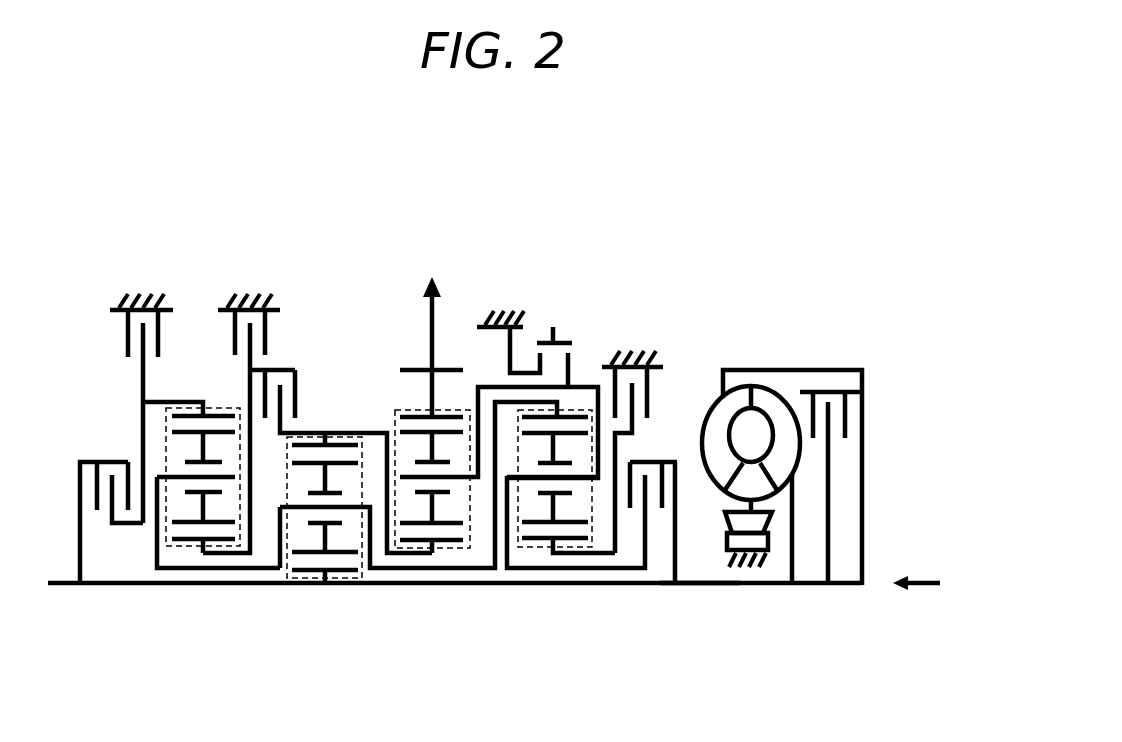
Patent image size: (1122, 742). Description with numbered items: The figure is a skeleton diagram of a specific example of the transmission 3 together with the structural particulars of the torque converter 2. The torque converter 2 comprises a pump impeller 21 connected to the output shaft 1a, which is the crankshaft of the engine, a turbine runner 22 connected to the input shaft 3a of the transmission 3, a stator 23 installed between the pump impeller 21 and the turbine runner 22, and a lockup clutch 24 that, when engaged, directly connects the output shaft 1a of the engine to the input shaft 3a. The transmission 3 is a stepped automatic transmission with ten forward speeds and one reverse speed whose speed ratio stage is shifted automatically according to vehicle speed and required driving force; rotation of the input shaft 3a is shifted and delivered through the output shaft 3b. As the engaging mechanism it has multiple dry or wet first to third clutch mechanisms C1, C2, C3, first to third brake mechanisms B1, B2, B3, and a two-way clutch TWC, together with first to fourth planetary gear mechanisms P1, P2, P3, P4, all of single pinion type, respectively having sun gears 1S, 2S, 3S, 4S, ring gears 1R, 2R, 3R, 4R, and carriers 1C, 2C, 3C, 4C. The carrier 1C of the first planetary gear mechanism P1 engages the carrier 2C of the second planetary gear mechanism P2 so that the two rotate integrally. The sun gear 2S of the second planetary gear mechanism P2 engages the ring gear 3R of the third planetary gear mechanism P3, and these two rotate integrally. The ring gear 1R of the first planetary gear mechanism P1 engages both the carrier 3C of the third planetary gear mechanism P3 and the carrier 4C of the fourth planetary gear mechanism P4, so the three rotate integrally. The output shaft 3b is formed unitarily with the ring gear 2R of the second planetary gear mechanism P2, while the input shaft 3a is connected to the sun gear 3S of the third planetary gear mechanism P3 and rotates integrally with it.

The torque converter 2 is at (799, 336).
The transmission 3 is at (548, 230).
The input shaft 3a is at (700, 586).
The output shaft 3b is at (447, 368).
The output shaft 1a is at (877, 586).
The pump impeller 21 is at (713, 417).
The turbine runner 22 is at (770, 400).
The stator 23 is at (768, 522).
The lockup clutch 24 is at (853, 453).
The ring gear 1R is at (577, 406).
The carrier 1C is at (572, 479).
The sun gear 1S is at (585, 585).
The first planetary gear mechanism P1 is at (520, 585).
The ring gear 2R is at (413, 412).
The carrier 2C is at (410, 474).
The sun gear 2S is at (410, 585).
The second planetary gear mechanism P2 is at (452, 548).
The ring gear 3R is at (305, 442).
The carrier 3C is at (302, 509).
The sun gear 3S is at (305, 572).
The third planetary gear mechanism P3 is at (352, 580).
The ring gear 4R is at (182, 413).
The carrier 4C is at (183, 479).
The sun gear 4S is at (183, 541).
The fourth planetary gear mechanism P4 is at (235, 548).
The first clutch mechanism C1 is at (657, 510).
The second clutch mechanism C2 is at (341, 447).
The third clutch mechanism C3 is at (109, 510).
The first brake mechanism B1 is at (634, 441).
The second brake mechanism B2 is at (241, 409).
The third brake mechanism B3 is at (141, 394).
The two-way clutch TWC is at (529, 342).